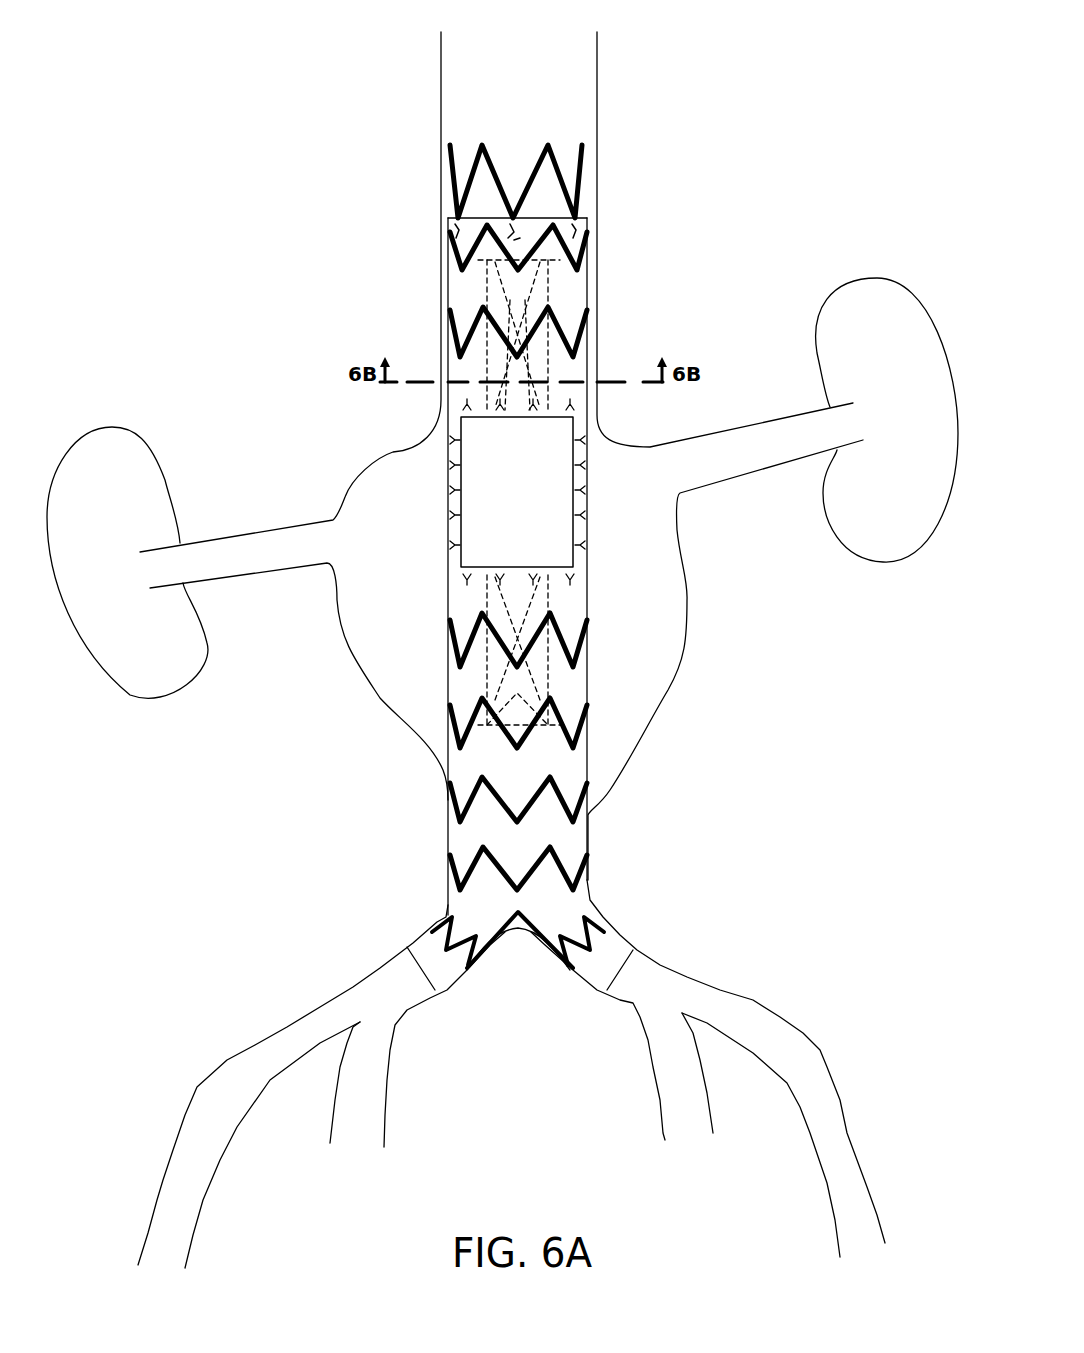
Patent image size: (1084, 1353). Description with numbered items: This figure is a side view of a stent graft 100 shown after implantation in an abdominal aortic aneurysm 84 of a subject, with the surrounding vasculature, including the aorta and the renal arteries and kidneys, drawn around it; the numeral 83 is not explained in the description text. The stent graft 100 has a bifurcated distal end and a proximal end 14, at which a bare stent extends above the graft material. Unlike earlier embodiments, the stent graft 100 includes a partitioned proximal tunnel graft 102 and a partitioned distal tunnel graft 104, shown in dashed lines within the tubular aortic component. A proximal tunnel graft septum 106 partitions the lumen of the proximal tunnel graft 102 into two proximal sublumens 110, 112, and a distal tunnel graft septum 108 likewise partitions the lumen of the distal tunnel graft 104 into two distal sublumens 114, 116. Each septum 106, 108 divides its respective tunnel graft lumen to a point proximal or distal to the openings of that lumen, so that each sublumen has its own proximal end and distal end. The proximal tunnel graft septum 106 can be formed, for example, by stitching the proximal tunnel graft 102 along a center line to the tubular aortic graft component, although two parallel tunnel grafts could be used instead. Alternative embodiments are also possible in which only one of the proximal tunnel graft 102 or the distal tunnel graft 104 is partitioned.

The aorta 83 is at (598, 102).
The abdominal aortic aneurysm 84 is at (663, 677).
The proximal end 14 is at (487, 217).
The partitioned proximal tunnel graft 102 is at (486, 298).
The proximal sublumen 110 is at (497, 343).
The proximal tunnel graft septum 106 is at (517, 315).
The proximal sublumen 112 is at (540, 342).
The stent graft 100 is at (444, 474).
The distal sublumen 114 is at (505, 618).
The distal sublumen 116 is at (533, 604).
The partitioned distal tunnel graft 104 is at (482, 680).
The distal tunnel graft septum 108 is at (517, 685).